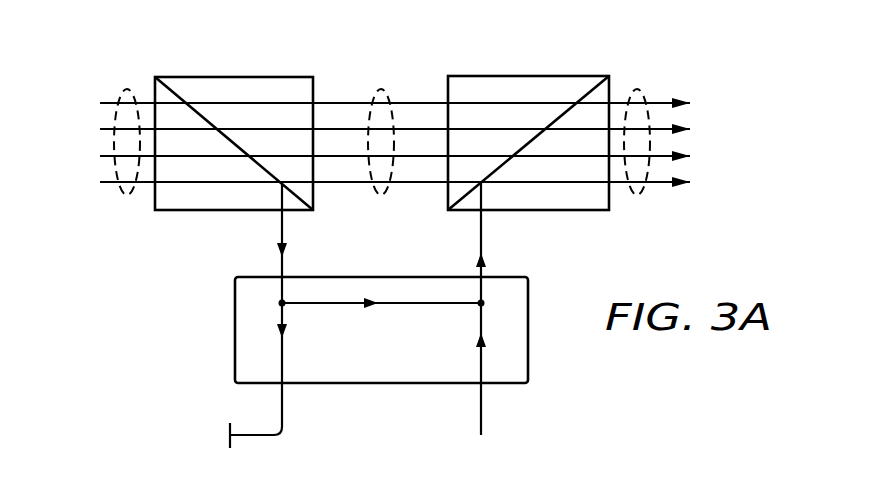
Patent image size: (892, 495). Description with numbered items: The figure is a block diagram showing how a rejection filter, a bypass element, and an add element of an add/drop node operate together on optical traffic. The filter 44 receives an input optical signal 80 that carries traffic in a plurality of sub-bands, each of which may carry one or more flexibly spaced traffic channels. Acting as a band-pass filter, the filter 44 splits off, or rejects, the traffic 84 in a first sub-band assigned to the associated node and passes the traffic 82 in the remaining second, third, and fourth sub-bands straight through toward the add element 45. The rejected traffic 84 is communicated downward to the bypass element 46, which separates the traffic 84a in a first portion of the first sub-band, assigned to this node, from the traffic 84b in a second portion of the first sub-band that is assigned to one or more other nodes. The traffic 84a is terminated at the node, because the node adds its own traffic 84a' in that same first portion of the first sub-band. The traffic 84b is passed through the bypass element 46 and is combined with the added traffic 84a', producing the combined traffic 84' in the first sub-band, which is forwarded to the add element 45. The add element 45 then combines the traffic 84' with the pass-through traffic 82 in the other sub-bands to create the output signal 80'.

The input optical signal 80 is at (115, 112).
The filter 44 is at (235, 77).
The pass-through traffic 82 is at (380, 90).
The add element 45 is at (528, 76).
The output signal 80' is at (652, 111).
The rejected traffic 84 is at (248, 242).
The bypass element 46 is at (382, 277).
The traffic in second portion of first sub-band 84b is at (403, 304).
The traffic in first portion of first sub-band 84a is at (297, 375).
The added traffic 84a' is at (525, 371).
The combined traffic in first sub-band 84' is at (517, 242).